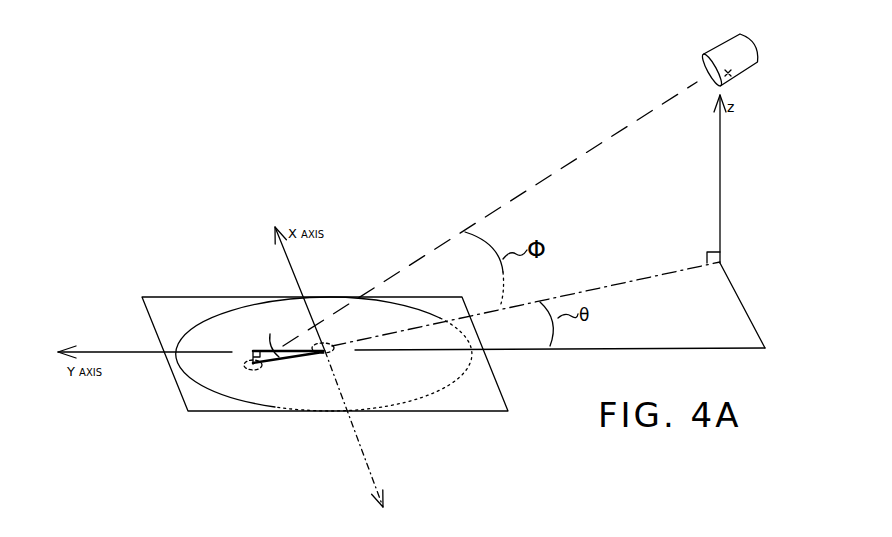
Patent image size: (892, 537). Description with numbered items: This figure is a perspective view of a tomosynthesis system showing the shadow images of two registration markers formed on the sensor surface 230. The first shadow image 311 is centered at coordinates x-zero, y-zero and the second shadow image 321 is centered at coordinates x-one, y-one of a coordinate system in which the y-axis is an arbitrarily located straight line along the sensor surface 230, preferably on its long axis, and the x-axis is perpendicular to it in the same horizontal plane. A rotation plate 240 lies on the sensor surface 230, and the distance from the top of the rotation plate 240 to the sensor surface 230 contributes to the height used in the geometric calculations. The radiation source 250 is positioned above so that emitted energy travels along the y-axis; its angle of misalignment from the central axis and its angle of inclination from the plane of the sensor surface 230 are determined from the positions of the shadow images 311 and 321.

The sensor surface 230 is at (506, 406).
The rotation plate 240 is at (210, 321).
The radiation source 250 is at (752, 59).
The shadow image 311 is at (334, 356).
The shadow image 321 is at (252, 373).